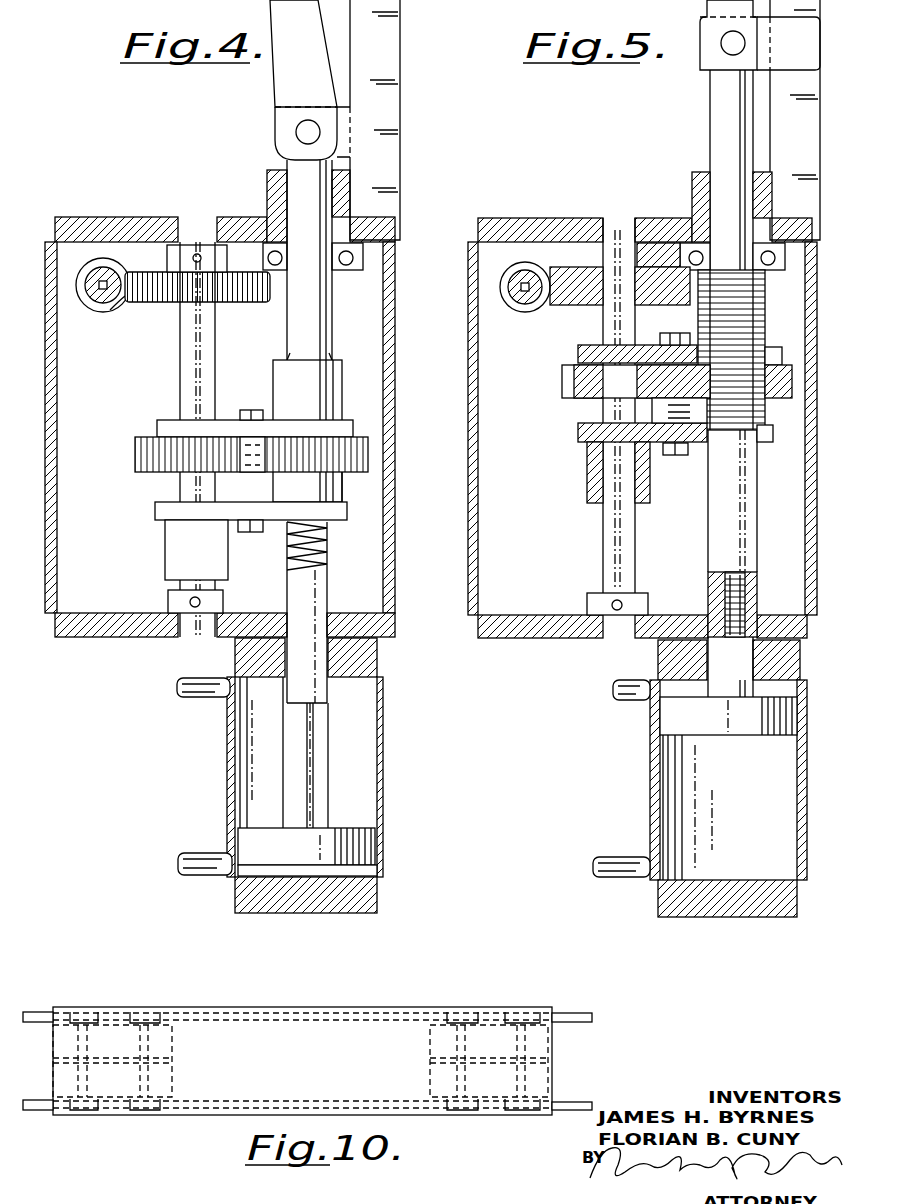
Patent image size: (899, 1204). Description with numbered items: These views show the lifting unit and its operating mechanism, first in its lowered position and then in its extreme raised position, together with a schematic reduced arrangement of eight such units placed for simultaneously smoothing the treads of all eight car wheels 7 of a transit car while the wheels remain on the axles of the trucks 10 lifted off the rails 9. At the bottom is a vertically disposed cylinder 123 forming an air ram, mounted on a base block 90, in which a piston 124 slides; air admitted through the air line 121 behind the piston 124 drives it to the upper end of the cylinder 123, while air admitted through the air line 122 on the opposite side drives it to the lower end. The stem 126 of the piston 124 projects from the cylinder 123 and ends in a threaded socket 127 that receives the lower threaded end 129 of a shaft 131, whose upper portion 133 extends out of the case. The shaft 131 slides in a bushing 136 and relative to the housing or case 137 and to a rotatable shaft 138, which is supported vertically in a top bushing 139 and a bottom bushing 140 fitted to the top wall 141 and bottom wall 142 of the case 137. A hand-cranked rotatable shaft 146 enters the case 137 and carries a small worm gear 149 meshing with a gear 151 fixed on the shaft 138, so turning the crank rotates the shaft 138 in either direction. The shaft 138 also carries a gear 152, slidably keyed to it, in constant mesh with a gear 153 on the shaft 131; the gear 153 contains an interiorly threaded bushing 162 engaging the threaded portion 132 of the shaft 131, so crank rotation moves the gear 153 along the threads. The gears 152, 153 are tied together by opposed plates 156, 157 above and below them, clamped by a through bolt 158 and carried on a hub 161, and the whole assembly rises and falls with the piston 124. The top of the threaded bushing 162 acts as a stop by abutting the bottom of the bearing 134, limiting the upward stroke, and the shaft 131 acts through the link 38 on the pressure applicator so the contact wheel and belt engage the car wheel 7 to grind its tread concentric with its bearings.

In FIG. 4, the link 38 is at (283, 78).
In FIG. 5, the link 38 is at (700, 4).
In FIG. 4, the screw shaft 133 is at (322, 316).
In FIG. 5, the screw shaft 133 is at (715, 103).
In FIG. 4, the rotatable shaft 146 is at (100, 312).
In FIG. 5, the rotatable shaft 146 is at (530, 278).
In FIG. 4, the small worm gear 149 is at (124, 308).
In FIG. 5, the small worm gear 149 is at (518, 306).
In FIG. 4, the gear 151 is at (150, 302).
In FIG. 5, the gear 151 is at (557, 302).
In FIG. 4, the rotatable shaft 138 is at (217, 330).
In FIG. 5, the rotatable shaft 138 is at (603, 538).
In FIG. 4, the through bolt 158 is at (258, 392).
In FIG. 5, the through bolt 158 is at (675, 455).
In FIG. 4, the interiorly threaded bushing 162 is at (335, 393).
In FIG. 5, the interiorly threaded bushing 162 is at (758, 333).
In FIG. 4, the plate 156 is at (165, 420).
In FIG. 5, the plate 156 is at (578, 352).
In FIG. 4, the gear 152 is at (135, 460).
In FIG. 5, the gear 152 is at (562, 385).
In FIG. 4, the gear 153 is at (343, 478).
In FIG. 5, the gear 153 is at (768, 398).
In FIG. 4, the plate 157 is at (155, 512).
In FIG. 5, the plate 157 is at (578, 433).
In FIG. 4, the threaded portion 132 is at (328, 553).
In FIG. 5, the threaded portion 132 is at (762, 289).
In FIG. 4, the shaft 131 is at (328, 590).
In FIG. 5, the shaft 131 is at (740, 518).
In FIG. 4, the air line 122 is at (210, 678).
In FIG. 5, the air line 122 is at (613, 688).
In FIG. 4, the cylinder 123 is at (394, 733).
In FIG. 5, the cylinder 123 is at (643, 806).
In FIG. 4, the stem 126 is at (315, 762).
In FIG. 5, the stem 126 is at (745, 670).
In FIG. 4, the piston 124 is at (347, 833).
In FIG. 5, the piston 124 is at (675, 722).
In FIG. 4, the air line 121 is at (215, 853).
In FIG. 5, the air line 121 is at (632, 877).
In FIG. 4, the base block 90 is at (287, 920).
In FIG. 5, the base block 90 is at (684, 923).
In FIG. 5, the bushing 136 is at (695, 175).
In FIG. 5, the housing or case 137 is at (541, 210).
In FIG. 5, the top bushing 139 is at (605, 218).
In FIG. 5, the bearing 134 is at (694, 248).
In FIG. 5, the top wall 141 is at (495, 240).
In FIG. 5, the hub 161 is at (587, 478).
In FIG. 5, the bottom wall 142 is at (500, 618).
In FIG. 5, the lower threaded end 129 is at (725, 590).
In FIG. 5, the threaded socket 127 is at (750, 602).
In FIG. 5, the bottom bushing 140 is at (600, 640).
In FIG. 10, the car wheel 7 is at (150, 1010).
In FIG. 10, the rails 9 is at (205, 1007).
In FIG. 10, the trucks 10 is at (175, 1050).